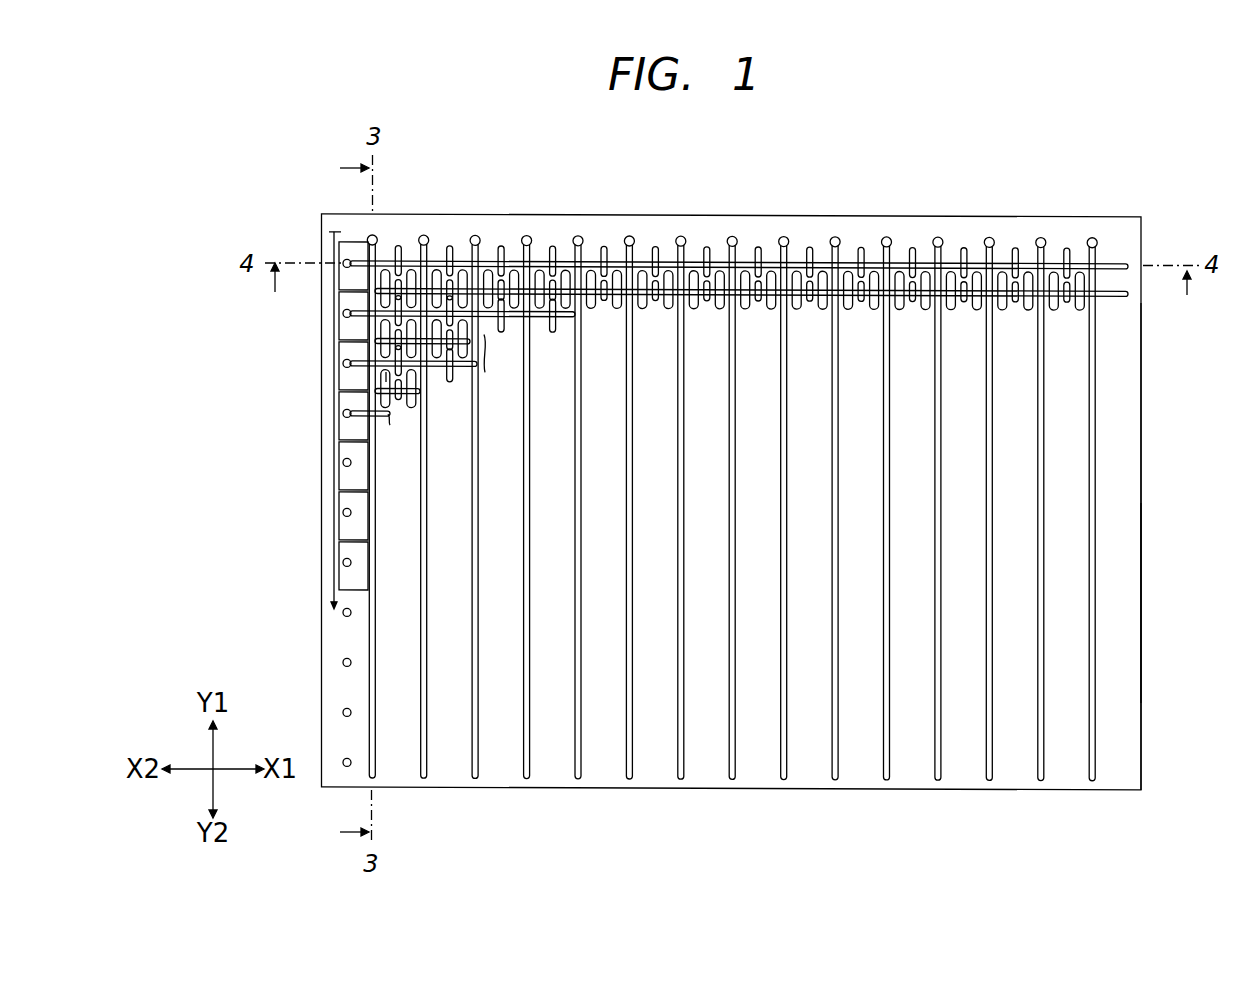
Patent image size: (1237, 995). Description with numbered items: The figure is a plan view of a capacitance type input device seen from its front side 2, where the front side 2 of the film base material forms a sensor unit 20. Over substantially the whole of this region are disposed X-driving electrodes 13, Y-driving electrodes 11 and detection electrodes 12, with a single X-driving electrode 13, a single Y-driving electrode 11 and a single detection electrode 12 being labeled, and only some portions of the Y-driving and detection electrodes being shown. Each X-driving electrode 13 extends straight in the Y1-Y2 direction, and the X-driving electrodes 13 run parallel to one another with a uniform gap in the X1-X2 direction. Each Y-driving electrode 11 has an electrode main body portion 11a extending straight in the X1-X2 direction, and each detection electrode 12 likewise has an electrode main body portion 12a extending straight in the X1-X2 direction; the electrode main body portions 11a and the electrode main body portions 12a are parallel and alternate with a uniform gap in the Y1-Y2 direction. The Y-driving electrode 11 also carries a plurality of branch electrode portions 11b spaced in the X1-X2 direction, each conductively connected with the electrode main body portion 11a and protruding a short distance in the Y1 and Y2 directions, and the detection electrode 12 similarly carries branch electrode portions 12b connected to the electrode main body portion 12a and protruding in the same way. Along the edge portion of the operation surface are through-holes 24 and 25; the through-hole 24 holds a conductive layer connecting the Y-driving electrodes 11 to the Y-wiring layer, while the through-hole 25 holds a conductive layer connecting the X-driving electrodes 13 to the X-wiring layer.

The front side 2 is at (1122, 609).
The Y-driving electrode 11 is at (411, 250).
The electrode main body portion 11a is at (512, 262).
The branch electrode portion 11b is at (552, 250).
The detection electrode 12 is at (346, 292).
The electrode main body portion 12a is at (607, 282).
The branch electrode portion 12b is at (666, 280).
The X-driving electrode 13 is at (381, 246).
The sensor unit 20 is at (1119, 494).
The through-hole 24 is at (346, 365).
The through-hole 25 is at (480, 234).